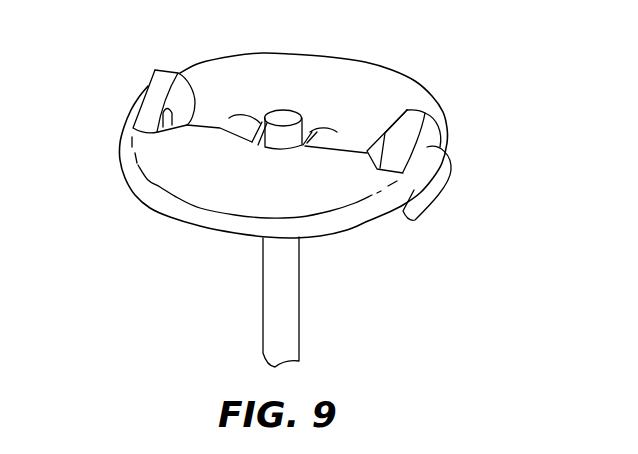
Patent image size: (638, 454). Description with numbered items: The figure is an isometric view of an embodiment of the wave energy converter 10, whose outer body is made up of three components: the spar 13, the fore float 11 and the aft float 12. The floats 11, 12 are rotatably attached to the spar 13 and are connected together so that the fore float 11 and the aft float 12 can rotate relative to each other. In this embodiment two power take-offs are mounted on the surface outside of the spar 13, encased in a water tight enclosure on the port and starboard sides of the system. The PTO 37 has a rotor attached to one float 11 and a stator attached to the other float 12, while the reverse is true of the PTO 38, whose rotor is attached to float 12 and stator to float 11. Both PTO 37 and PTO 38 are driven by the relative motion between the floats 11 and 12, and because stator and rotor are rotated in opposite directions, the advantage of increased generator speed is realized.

The wave energy converter 10 is at (452, 87).
The fore float 11 is at (146, 183).
The aft float 12 is at (357, 72).
The spar 13 is at (270, 300).
The PTO 37 is at (427, 133).
The PTO 38 is at (150, 90).